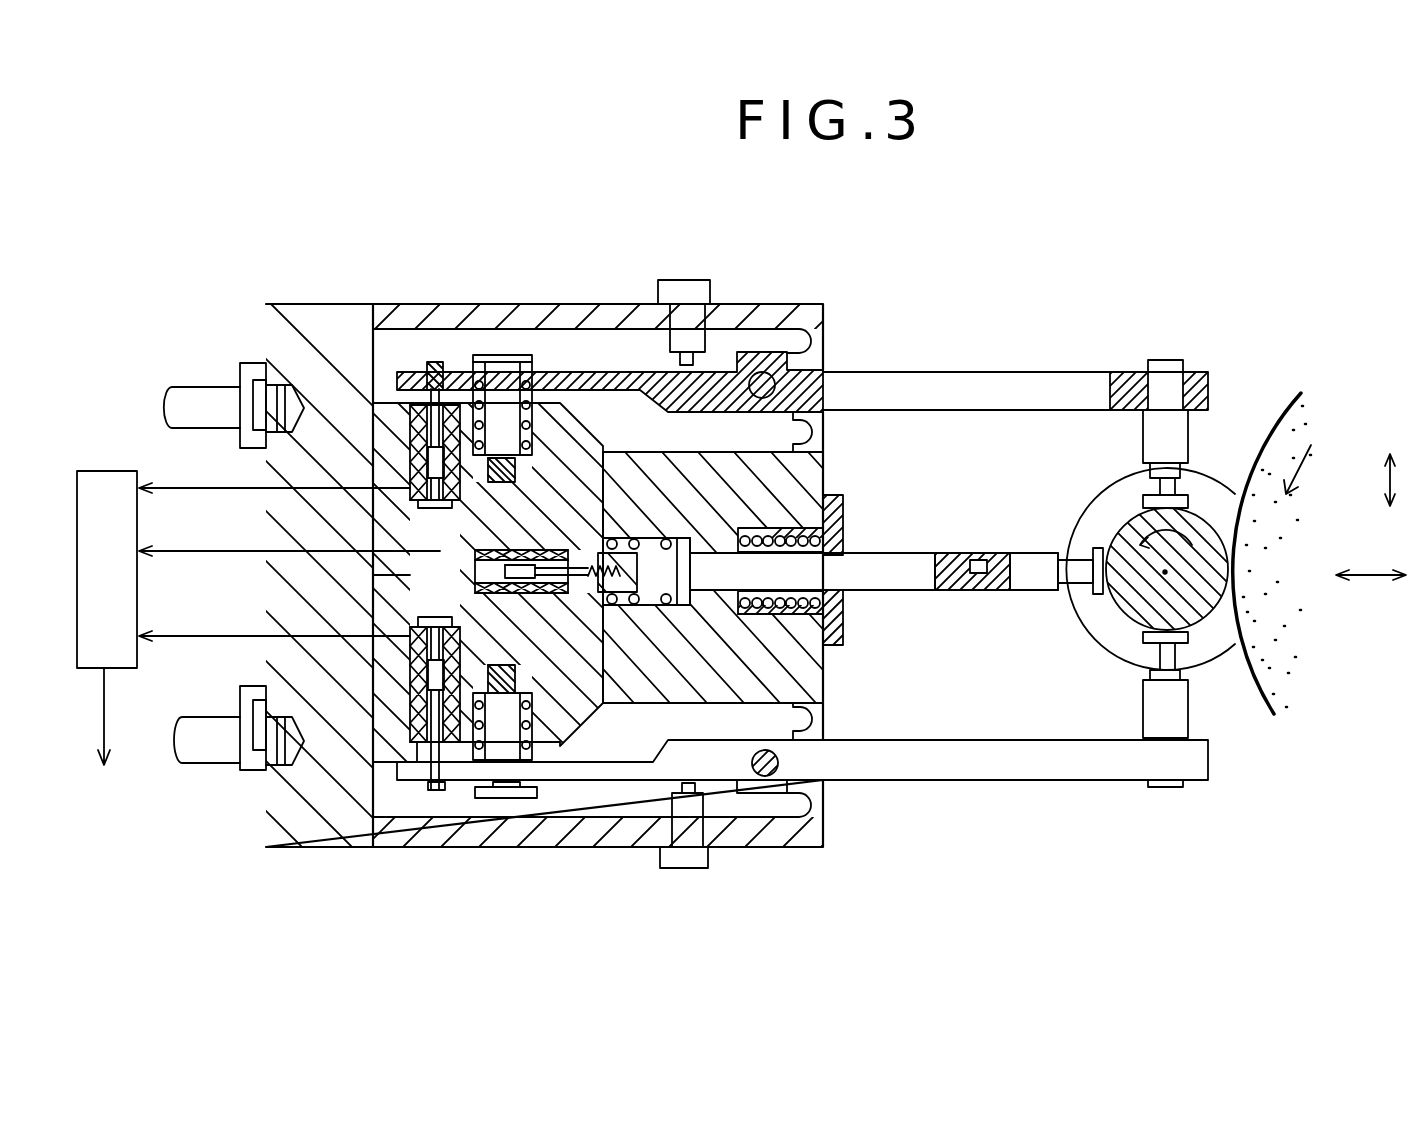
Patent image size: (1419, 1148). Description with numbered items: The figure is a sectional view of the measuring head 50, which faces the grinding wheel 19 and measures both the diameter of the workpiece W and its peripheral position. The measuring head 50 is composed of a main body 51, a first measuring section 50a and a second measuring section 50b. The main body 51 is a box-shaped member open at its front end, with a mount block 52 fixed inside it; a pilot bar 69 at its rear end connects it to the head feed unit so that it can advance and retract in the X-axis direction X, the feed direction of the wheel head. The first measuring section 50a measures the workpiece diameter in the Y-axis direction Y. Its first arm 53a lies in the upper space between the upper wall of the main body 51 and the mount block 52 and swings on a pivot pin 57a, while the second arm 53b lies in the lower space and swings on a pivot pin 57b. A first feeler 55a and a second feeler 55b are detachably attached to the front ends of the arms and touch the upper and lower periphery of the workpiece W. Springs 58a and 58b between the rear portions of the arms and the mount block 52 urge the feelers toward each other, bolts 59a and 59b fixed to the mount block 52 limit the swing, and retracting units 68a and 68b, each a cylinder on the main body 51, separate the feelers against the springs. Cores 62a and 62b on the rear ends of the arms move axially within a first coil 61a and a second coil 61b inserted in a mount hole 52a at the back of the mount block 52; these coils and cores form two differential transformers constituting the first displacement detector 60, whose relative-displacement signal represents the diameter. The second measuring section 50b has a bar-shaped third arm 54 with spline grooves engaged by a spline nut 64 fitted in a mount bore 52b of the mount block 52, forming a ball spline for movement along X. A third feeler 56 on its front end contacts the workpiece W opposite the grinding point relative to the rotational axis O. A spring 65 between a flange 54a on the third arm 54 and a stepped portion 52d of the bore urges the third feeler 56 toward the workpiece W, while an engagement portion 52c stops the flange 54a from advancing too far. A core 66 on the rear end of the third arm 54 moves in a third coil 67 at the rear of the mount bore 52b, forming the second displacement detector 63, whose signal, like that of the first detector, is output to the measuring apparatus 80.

The measuring head 50 is at (557, 242).
The first measuring section 50a is at (1097, 360).
The second measuring section 50b is at (980, 612).
The main body 51 is at (430, 308).
The mount block 52 is at (800, 470).
The mount hole 52a is at (410, 578).
The mount bore 52b is at (785, 620).
The engagement portion 52c is at (683, 545).
The stepped portion 52d is at (632, 605).
The first arm 53a is at (1008, 385).
The second arm 53b is at (965, 765).
The third arm 54 is at (915, 592).
The flange 54a is at (768, 640).
The first feeler 55a is at (1150, 432).
The second feeler 55b is at (1150, 710).
The third feeler 56 is at (1032, 592).
The pivot pin 57a is at (772, 377).
The pivot pin 57b is at (790, 782).
The spring 58a is at (545, 403).
The spring 58b is at (485, 782).
The bolt 59a is at (500, 380).
The bolt 59b is at (505, 762).
The first displacement detector 60 is at (420, 515).
The first coil 61a is at (406, 442).
The second coil 61b is at (410, 705).
The core 62a is at (410, 460).
The core 62b is at (520, 668).
The second displacement detector 63 is at (567, 608).
The spline nut 64 is at (840, 514).
The spring 65 is at (672, 605).
The core 66 is at (528, 548).
The third coil 67 is at (548, 560).
The retracting unit 68a is at (690, 292).
The retracting unit 68b is at (690, 870).
The pilot bar 69 is at (192, 393).
The measuring apparatus 80 is at (104, 468).
The workpiece W is at (1198, 527).
The rotational axis of the workpiece O is at (1168, 575).
The grinding wheel 19 is at (1303, 690).
The X-axis direction X is at (1371, 597).
The Y-axis direction Y is at (1399, 480).